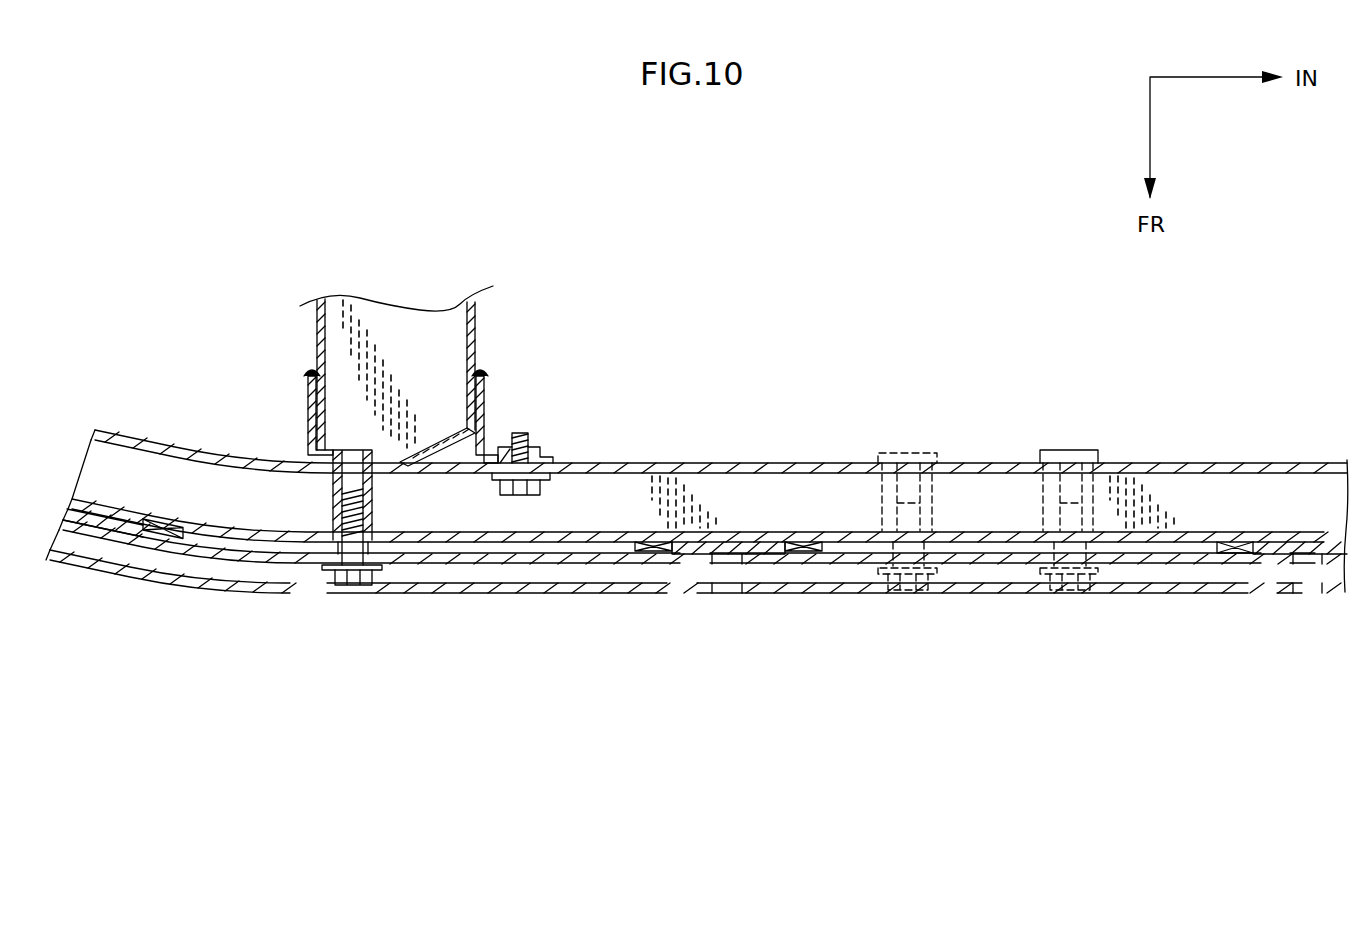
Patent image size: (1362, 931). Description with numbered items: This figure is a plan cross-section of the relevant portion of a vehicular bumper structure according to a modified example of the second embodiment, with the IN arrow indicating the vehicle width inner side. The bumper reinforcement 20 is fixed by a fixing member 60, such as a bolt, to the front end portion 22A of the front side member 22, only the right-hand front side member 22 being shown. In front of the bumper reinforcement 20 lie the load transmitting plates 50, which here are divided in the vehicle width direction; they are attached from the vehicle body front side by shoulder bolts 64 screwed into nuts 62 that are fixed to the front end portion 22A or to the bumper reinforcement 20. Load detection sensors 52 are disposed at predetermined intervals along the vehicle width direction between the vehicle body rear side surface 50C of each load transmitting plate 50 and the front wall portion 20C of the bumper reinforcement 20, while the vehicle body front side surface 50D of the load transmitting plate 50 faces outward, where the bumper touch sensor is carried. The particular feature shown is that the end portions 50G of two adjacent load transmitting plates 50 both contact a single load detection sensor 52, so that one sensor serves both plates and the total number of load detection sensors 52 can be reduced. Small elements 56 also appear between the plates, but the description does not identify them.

The bumper reinforcement 20 is at (771, 462).
The front wall portion of the bumper reinforcement 20C is at (560, 545).
The front side member 22 is at (478, 324).
The front end portion of the front side member 22A is at (455, 432).
The load transmitting plate 50 is at (437, 594).
The vehicle body rear side surface of the load transmitting plate 50C is at (440, 554).
The vehicle body front side surface of the load transmitting plate 50D is at (243, 594).
The end portions of adjacent load transmitting plates 50G is at (755, 566).
The load detection sensor 52 is at (768, 542).
The weld portion 56 is at (163, 540).
The fixing member 60 is at (538, 488).
The nut 62 is at (333, 490).
The shoulder bolt 64 is at (355, 587).